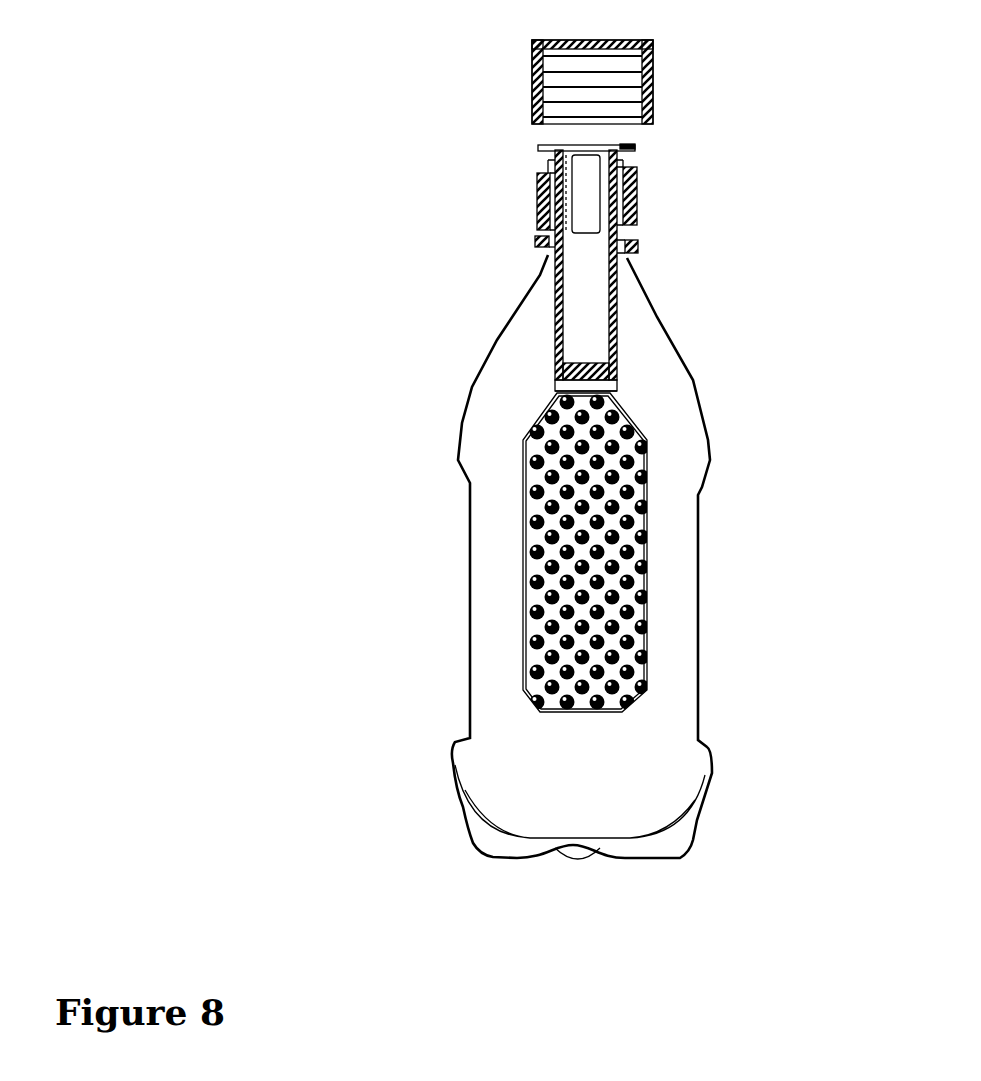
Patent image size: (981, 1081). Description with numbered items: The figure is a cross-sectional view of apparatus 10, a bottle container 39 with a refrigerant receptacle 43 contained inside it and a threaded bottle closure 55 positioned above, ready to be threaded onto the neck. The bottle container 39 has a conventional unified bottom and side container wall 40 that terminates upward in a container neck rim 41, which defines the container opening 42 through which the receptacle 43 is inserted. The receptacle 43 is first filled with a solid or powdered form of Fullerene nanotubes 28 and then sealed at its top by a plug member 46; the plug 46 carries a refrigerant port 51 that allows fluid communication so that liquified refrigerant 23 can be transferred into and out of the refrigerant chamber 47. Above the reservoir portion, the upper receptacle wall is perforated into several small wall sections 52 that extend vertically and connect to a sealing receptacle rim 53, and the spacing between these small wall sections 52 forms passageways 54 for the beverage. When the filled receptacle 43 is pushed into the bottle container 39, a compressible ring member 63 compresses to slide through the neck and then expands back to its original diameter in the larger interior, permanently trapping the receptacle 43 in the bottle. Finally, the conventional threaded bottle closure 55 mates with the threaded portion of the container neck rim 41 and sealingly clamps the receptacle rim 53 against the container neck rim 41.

The apparatus 10 is at (786, 100).
The liquified refrigerant 23 is at (550, 560).
The Fullerene nanotubes 28 is at (540, 475).
The bottle container 39 is at (467, 637).
The unified bottom and side container wall 40 is at (713, 770).
The container neck rim 41 is at (630, 163).
The container opening 42 is at (540, 157).
The receptacle 43 is at (635, 148).
The plug member 46 is at (558, 372).
The refrigerant chamber 47 is at (557, 386).
The refrigerant port 51 is at (588, 368).
The small wall sections 52 is at (542, 197).
The sealing receptacle rim 53 is at (542, 147).
The passageways 54 is at (575, 232).
The threaded bottle closure 55 is at (657, 87).
The compressible ring member 63 is at (620, 263).